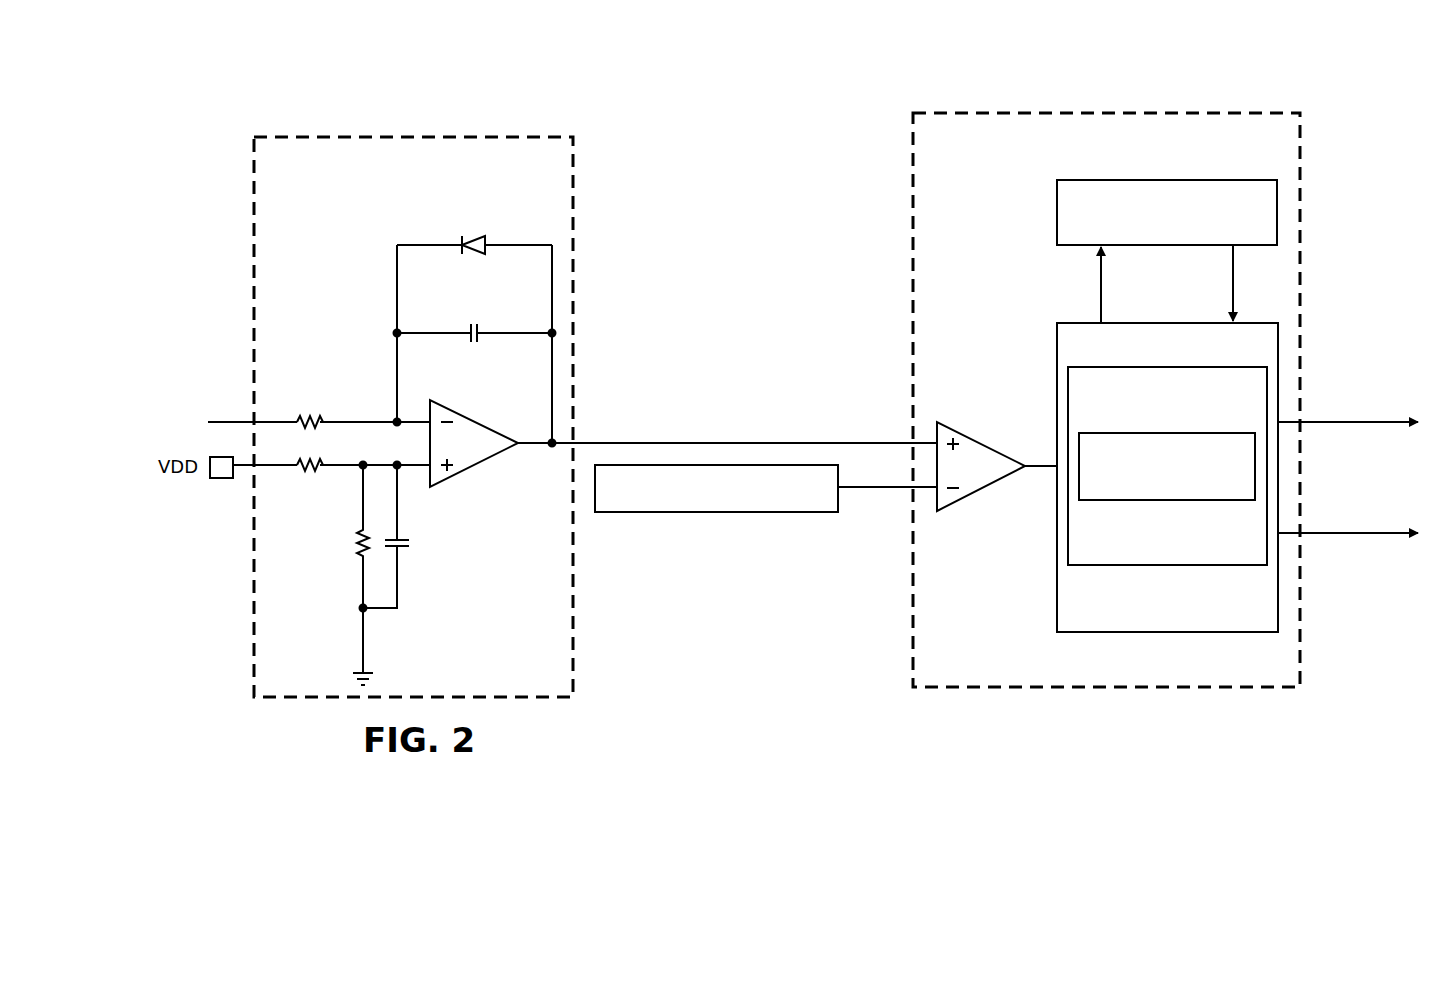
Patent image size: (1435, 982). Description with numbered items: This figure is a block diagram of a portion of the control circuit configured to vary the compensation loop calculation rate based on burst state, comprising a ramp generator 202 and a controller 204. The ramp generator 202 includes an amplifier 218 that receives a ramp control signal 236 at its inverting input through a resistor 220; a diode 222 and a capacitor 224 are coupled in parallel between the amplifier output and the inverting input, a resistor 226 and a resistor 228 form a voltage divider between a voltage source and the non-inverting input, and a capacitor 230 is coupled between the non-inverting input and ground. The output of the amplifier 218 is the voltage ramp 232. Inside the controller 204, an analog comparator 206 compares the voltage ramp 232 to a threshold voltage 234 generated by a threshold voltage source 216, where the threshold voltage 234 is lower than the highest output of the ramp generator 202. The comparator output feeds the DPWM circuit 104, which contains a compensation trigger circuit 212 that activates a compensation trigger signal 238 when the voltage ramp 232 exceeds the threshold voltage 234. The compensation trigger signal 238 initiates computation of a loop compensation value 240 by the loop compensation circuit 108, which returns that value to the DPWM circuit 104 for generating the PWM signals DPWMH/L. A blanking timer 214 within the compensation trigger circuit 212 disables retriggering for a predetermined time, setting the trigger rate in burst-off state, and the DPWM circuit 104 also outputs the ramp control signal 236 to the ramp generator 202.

The DPWM circuit 104 is at (1055, 363).
The loop compensation circuit 108 is at (1056, 212).
The ramp generator 202 is at (385, 135).
The controller 204 is at (1156, 111).
The analog comparator 206 is at (980, 442).
The compensation trigger circuit 212 is at (1168, 566).
The blanking timer 214 is at (1168, 501).
The threshold voltage source 216 is at (714, 513).
The amplifier 218 is at (473, 420).
The resistor 220 is at (308, 418).
The diode 222 is at (474, 236).
The capacitor 224 is at (474, 324).
The resistor 226 is at (306, 470).
The resistor 228 is at (358, 541).
The capacitor 230 is at (410, 544).
The voltage ramp 232 is at (860, 442).
The threshold voltage 234 is at (858, 489).
The ramp control signal 236 is at (233, 421).
The compensation trigger signal 238 is at (1100, 290).
The loop compensation value 240 is at (1232, 290).